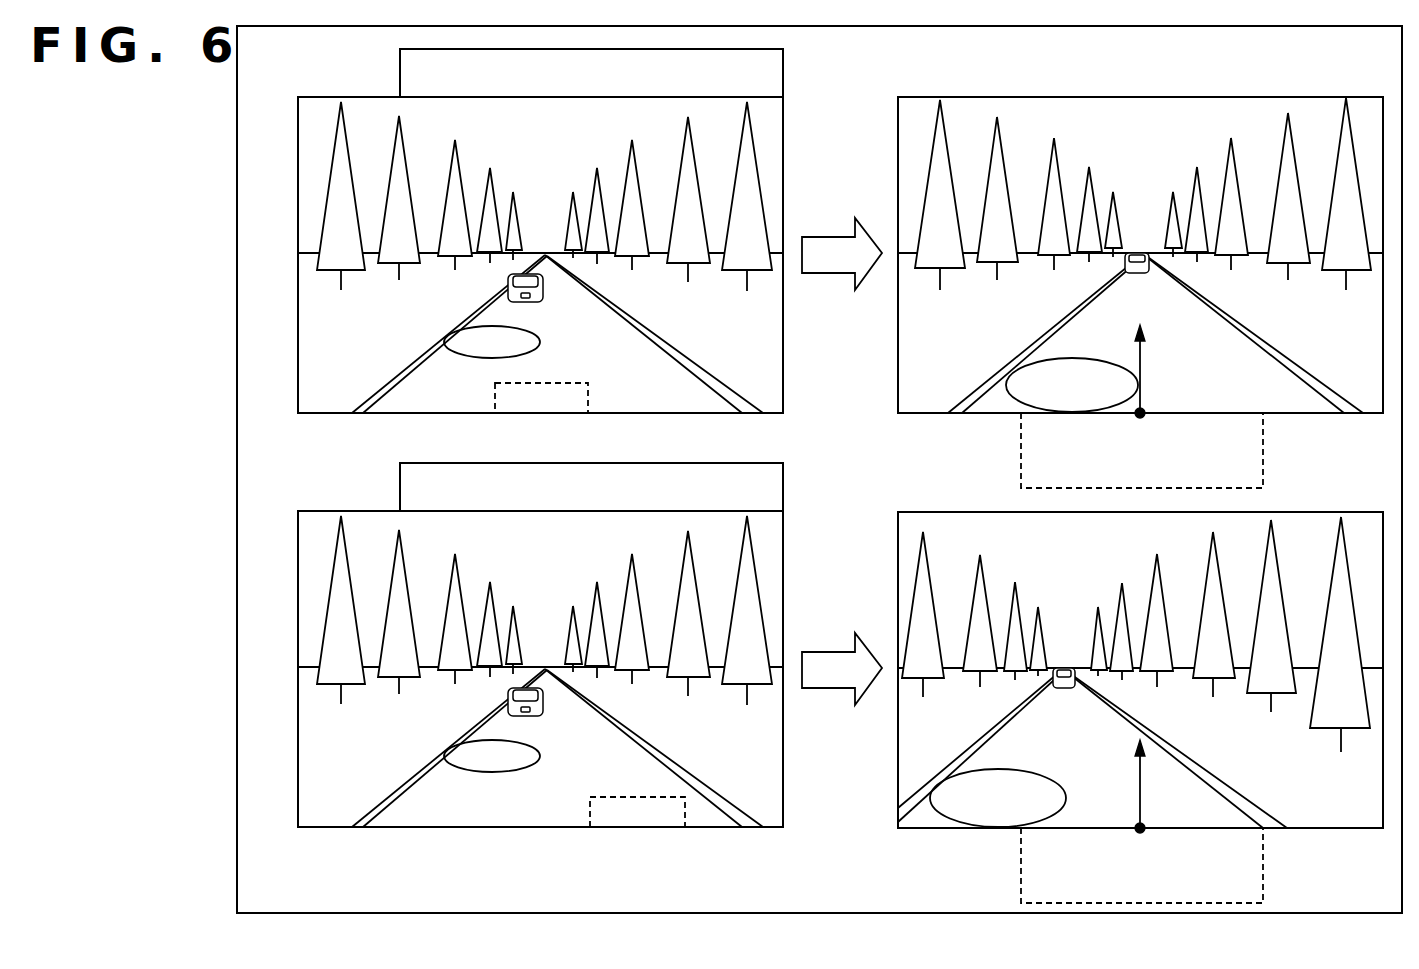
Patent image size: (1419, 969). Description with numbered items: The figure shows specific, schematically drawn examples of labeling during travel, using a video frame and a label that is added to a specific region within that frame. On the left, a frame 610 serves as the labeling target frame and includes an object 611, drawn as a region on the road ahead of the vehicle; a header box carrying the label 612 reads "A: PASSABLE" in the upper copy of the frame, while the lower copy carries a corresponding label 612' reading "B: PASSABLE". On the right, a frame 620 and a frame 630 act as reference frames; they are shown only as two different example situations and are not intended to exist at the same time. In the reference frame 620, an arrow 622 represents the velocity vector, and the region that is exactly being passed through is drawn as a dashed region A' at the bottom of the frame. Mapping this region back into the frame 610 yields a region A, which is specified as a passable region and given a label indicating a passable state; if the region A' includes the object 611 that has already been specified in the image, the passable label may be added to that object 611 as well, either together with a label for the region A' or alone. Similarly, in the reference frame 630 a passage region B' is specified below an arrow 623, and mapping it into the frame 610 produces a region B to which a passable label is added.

The frame 610 is at (337, 97).
The object 611 is at (445, 340).
The passability label A 612 is at (629, 70).
The passability label B 612' is at (632, 484).
The frame 620 is at (944, 97).
The arrow 622 is at (1142, 374).
The frame 630 is at (942, 512).
The arrow 623 is at (1142, 790).
The region A is at (574, 415).
The region B is at (670, 831).
The region A' is at (1171, 450).
The passage region B' is at (1171, 865).